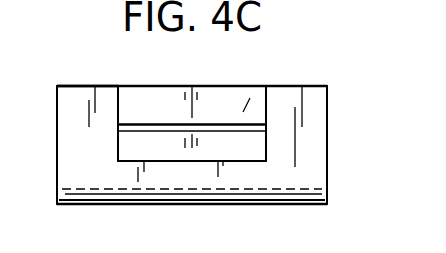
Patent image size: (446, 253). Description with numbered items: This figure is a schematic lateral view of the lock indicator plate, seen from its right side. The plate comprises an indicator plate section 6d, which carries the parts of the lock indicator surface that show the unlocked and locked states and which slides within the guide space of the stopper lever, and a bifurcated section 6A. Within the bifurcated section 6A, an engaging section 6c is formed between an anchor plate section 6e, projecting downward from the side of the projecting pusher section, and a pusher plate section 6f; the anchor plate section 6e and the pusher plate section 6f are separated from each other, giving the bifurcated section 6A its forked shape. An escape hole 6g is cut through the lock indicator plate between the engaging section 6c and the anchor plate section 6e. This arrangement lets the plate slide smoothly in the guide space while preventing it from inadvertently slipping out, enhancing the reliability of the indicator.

The bifurcated section 6A is at (83, 160).
The engaging section 6c is at (233, 147).
The indicator plate section 6d is at (106, 85).
The anchor plate section 6e is at (205, 206).
The pusher plate section 6f is at (163, 189).
The escape hole 6g is at (215, 110).